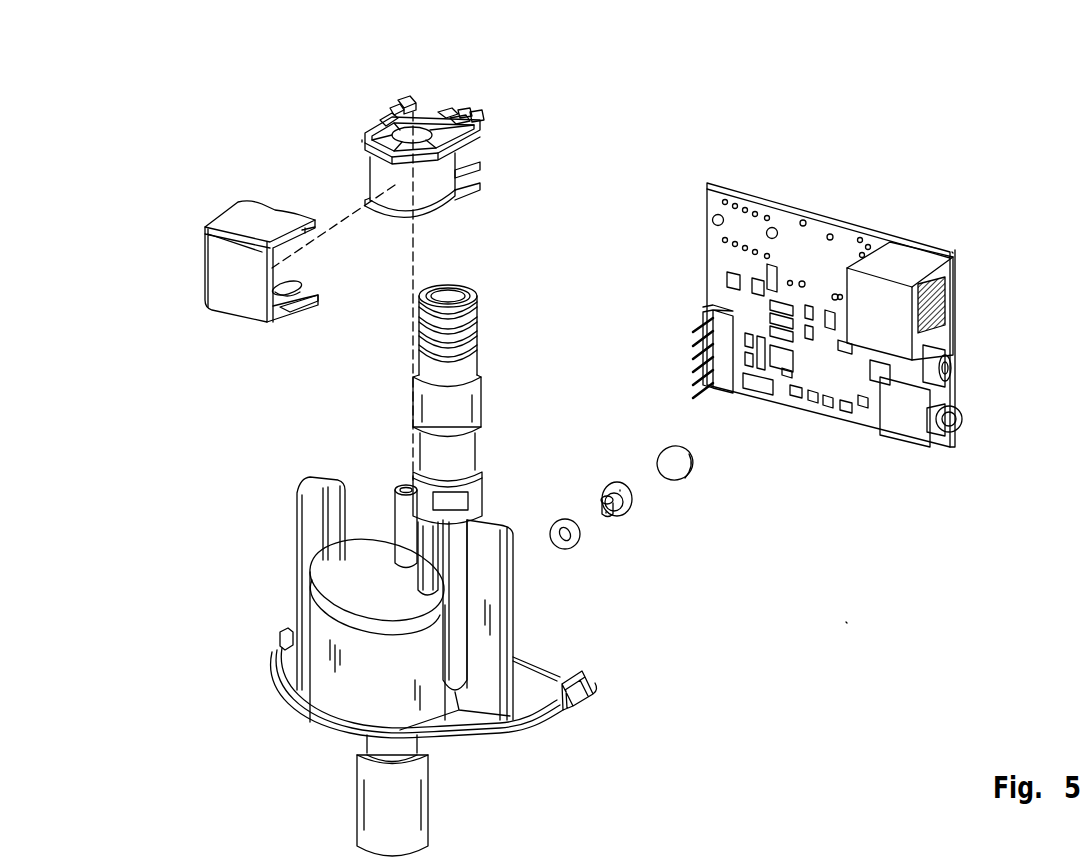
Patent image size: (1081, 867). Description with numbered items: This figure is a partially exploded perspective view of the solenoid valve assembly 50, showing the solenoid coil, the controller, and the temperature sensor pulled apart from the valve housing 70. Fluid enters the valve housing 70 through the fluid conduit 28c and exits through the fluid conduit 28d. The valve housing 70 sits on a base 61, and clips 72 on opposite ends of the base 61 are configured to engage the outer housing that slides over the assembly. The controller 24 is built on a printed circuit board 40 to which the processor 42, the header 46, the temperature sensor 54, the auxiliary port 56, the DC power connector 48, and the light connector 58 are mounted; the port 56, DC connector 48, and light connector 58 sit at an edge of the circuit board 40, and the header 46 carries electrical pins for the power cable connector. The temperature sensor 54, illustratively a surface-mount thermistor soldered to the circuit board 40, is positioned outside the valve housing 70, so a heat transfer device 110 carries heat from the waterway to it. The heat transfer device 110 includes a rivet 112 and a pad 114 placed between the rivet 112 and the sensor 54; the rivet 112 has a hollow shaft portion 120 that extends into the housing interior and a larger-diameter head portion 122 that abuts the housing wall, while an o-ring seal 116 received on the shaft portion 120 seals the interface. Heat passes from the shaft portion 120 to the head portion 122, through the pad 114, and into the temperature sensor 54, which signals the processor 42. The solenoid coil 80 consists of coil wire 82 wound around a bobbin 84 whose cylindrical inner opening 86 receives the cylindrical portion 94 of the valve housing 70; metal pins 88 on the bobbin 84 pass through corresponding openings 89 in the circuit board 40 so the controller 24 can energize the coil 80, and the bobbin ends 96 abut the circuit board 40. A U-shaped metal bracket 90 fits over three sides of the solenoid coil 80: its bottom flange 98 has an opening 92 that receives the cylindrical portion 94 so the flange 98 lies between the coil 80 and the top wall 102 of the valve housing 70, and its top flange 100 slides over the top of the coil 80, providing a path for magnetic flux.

The controller 24 is at (987, 240).
The fluid conduit 28c is at (352, 800).
The fluid conduit 28d is at (482, 296).
The printed circuit board 40 is at (758, 190).
The processor 42 is at (786, 378).
The header 46 is at (702, 313).
The DC power connector 48 is at (956, 360).
The solenoid valve assembly 50 is at (843, 624).
The temperature sensor 54 is at (822, 376).
The auxiliary port 56 is at (905, 260).
The light connector 58 is at (962, 420).
The base 61 is at (534, 746).
The valve housing 70 is at (338, 680).
The clips 72 is at (272, 632).
The solenoid coil 80 is at (235, 118).
The coil wire 82 is at (372, 178).
The bobbin 84 is at (378, 112).
The cylindrical inner opening 86 is at (405, 105).
The metal pins 88 is at (440, 112).
The openings 89 is at (835, 296).
The U-shaped metal bracket 90 is at (190, 240).
The opening 92 is at (294, 283).
The cylindrical portion 94 is at (392, 478).
The ends 96 is at (490, 118).
The bottom flange 98 is at (290, 315).
The top flange 100 is at (238, 215).
The top wall 102 is at (346, 580).
The heat transfer device 110 is at (633, 532).
The rivet 112 is at (592, 487).
The pad 114 is at (668, 437).
The o-ring seal 116 is at (572, 553).
The hollow shaft portion 120 is at (612, 522).
The head portion 122 is at (612, 480).